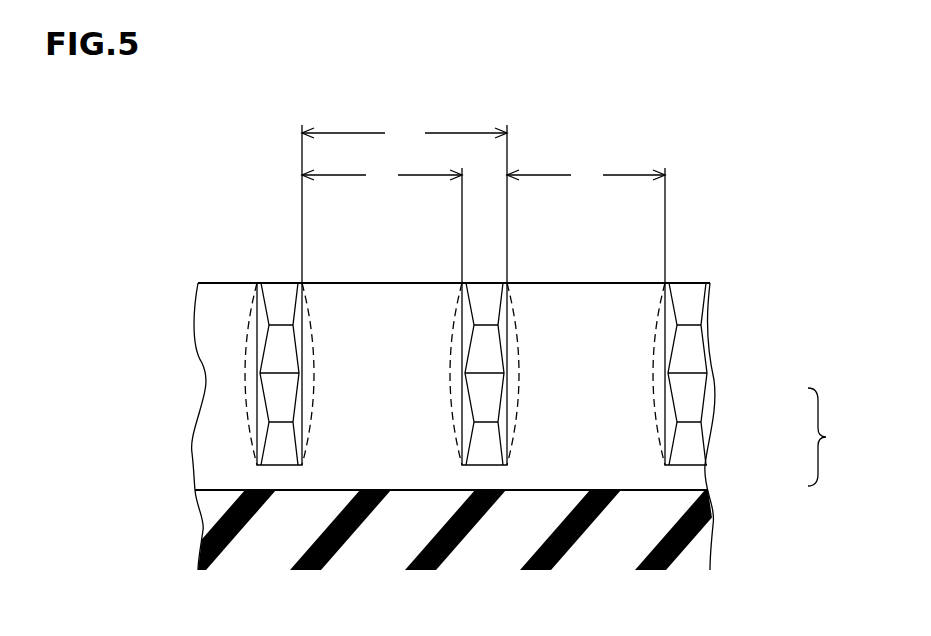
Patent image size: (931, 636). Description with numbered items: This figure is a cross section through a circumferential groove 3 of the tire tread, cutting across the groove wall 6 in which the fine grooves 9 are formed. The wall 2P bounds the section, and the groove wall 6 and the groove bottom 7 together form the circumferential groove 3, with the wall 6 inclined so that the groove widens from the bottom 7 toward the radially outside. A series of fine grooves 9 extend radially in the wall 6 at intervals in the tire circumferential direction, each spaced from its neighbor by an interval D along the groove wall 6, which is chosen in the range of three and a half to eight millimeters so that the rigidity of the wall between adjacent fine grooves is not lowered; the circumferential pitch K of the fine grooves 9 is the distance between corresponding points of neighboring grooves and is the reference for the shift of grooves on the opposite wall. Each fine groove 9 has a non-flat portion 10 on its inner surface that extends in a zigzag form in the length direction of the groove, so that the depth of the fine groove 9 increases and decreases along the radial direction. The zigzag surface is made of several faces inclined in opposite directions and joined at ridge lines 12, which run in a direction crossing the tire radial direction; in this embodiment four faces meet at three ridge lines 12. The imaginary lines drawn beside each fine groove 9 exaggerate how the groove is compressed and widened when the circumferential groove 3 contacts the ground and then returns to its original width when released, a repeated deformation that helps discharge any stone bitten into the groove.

The tread portion 2P is at (218, 283).
The circumferential groove 3 is at (826, 437).
The groove wall 6 is at (632, 418).
The groove bottom 7 is at (653, 488).
The fine groove 9 is at (283, 303).
The non-flat portion 10 is at (483, 350).
The ridge line 12 is at (273, 323).
The pitch K is at (404, 202).
The interval D is at (483, 223).